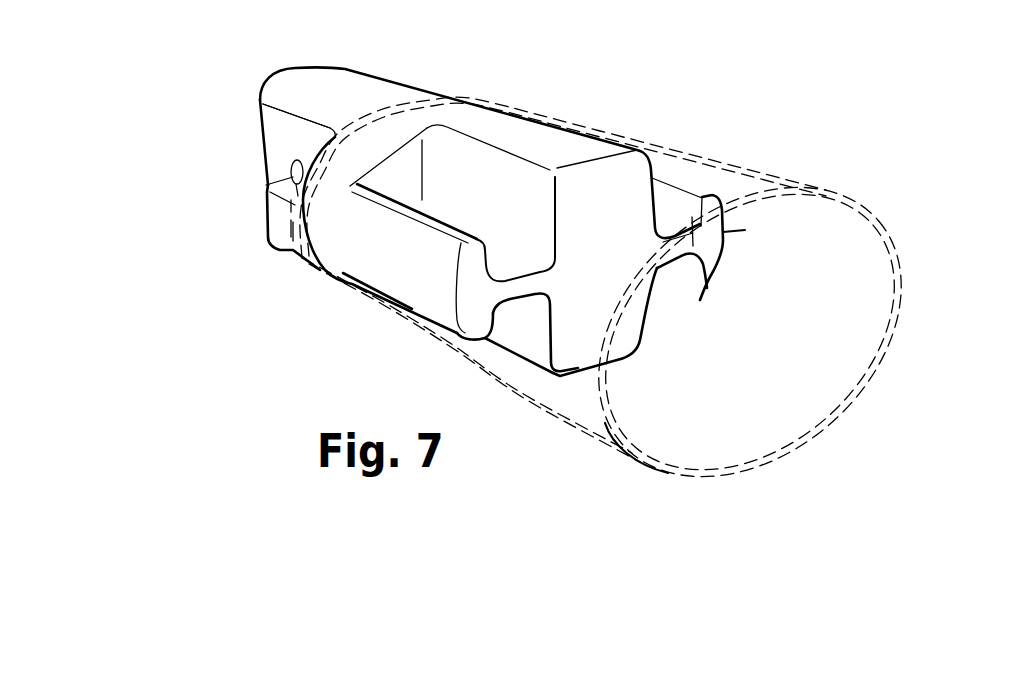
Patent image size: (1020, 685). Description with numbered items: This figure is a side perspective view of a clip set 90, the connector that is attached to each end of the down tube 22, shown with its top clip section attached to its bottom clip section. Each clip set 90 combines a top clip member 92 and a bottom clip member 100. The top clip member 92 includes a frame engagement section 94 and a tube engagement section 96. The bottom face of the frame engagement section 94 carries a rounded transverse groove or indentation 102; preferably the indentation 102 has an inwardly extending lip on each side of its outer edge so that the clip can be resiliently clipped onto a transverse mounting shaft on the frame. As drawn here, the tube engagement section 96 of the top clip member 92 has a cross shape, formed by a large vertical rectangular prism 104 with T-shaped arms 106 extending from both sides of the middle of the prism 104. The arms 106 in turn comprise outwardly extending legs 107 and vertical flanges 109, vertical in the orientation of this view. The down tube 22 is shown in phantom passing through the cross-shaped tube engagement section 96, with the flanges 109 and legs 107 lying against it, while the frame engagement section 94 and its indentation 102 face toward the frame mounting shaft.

The down tube 22 is at (760, 167).
The clip set 90 is at (197, 163).
The top clip member 92 is at (419, 88).
The frame engagement section 94 is at (311, 80).
The tube engagement section 96 is at (547, 144).
The bottom clip member 100 is at (287, 250).
The indentation 102 is at (272, 180).
The vertical rectangular prism 104 is at (630, 177).
The T-shaped arms 106 is at (472, 305).
The outwardly extending legs 107 is at (512, 293).
The vertical flanges 109 is at (410, 310).